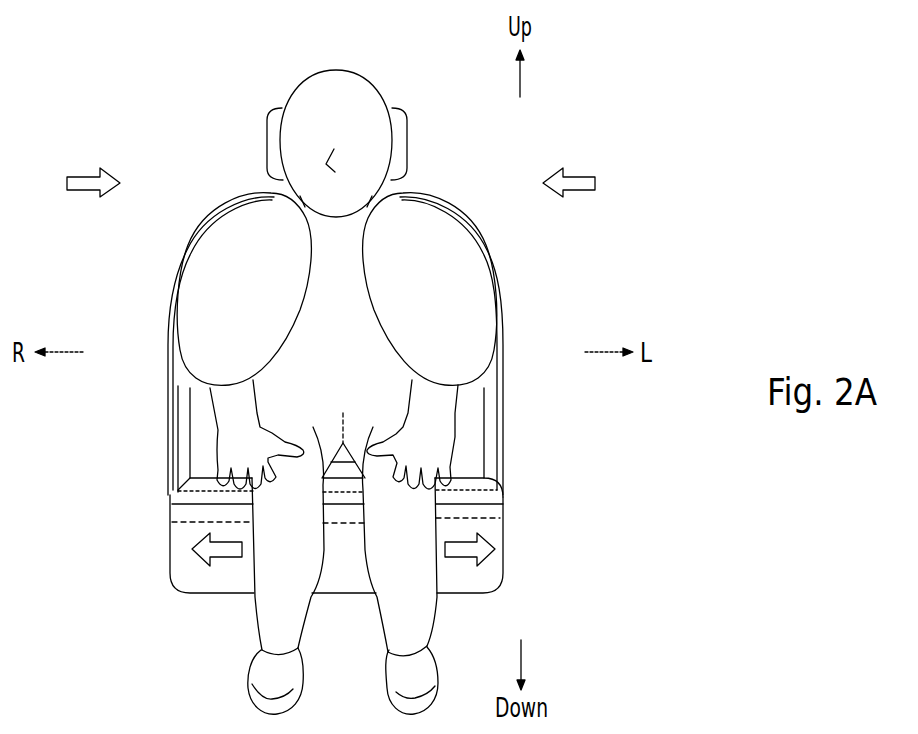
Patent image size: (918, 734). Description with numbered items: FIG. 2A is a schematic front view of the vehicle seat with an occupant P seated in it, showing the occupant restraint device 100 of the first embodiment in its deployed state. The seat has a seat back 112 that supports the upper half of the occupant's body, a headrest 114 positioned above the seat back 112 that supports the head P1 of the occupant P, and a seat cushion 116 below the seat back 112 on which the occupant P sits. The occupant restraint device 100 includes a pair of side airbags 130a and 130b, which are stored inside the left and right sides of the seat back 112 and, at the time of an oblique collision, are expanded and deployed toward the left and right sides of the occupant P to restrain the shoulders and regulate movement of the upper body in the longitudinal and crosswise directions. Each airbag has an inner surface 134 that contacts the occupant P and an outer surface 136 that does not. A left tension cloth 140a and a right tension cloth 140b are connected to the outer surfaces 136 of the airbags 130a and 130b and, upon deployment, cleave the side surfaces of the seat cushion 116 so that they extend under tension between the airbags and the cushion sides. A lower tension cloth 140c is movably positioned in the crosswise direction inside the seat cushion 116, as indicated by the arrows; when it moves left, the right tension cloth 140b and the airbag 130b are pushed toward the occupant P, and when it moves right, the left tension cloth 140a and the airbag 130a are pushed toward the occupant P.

The occupant restraint device 100 is at (202, 150).
The seat back 112 is at (200, 410).
The headrest 114 is at (404, 146).
The seat cushion 116 is at (505, 565).
The airbag 130a is at (463, 290).
The airbag 130b is at (217, 290).
The inner surface 134 is at (382, 327).
The outer surface 136 is at (196, 260).
The left tension cloth 140a is at (505, 394).
The right tension cloth 140b is at (170, 445).
The lower tension cloth 140c is at (490, 516).
The occupant P is at (283, 80).
The head P1 is at (383, 84).